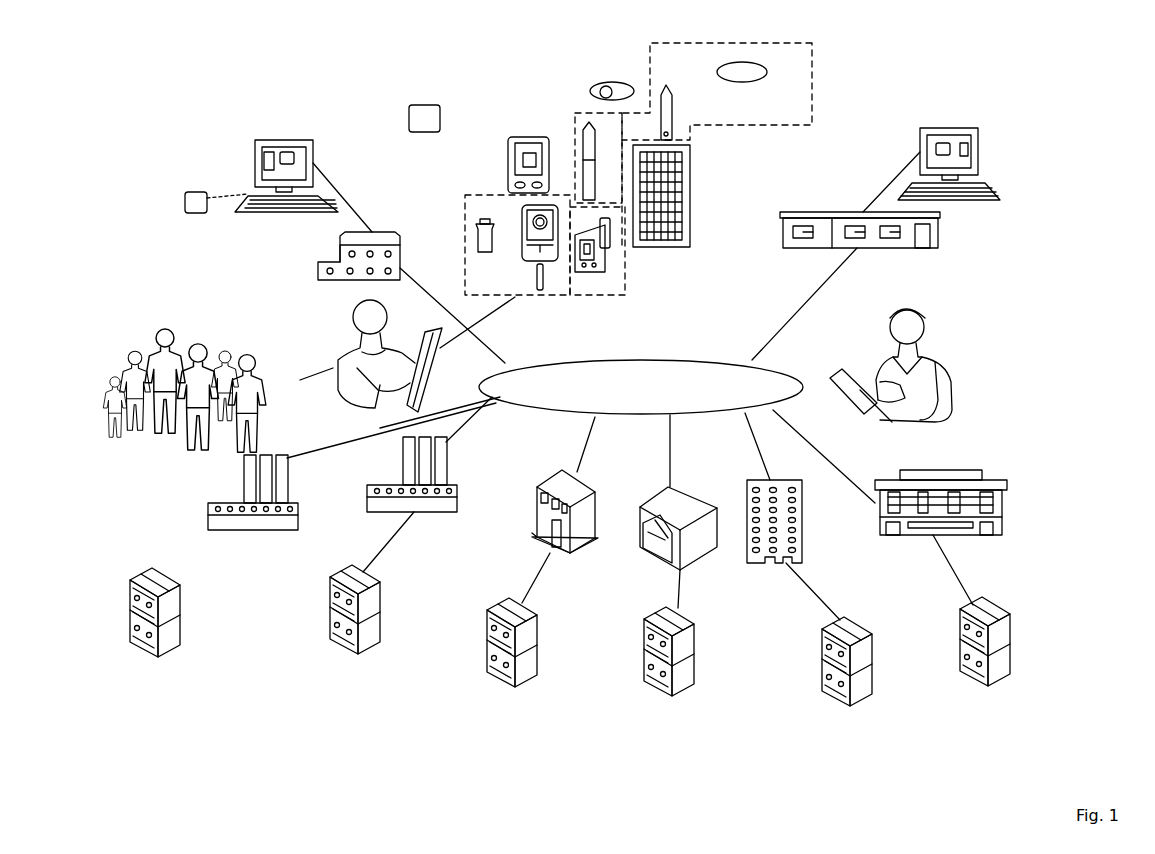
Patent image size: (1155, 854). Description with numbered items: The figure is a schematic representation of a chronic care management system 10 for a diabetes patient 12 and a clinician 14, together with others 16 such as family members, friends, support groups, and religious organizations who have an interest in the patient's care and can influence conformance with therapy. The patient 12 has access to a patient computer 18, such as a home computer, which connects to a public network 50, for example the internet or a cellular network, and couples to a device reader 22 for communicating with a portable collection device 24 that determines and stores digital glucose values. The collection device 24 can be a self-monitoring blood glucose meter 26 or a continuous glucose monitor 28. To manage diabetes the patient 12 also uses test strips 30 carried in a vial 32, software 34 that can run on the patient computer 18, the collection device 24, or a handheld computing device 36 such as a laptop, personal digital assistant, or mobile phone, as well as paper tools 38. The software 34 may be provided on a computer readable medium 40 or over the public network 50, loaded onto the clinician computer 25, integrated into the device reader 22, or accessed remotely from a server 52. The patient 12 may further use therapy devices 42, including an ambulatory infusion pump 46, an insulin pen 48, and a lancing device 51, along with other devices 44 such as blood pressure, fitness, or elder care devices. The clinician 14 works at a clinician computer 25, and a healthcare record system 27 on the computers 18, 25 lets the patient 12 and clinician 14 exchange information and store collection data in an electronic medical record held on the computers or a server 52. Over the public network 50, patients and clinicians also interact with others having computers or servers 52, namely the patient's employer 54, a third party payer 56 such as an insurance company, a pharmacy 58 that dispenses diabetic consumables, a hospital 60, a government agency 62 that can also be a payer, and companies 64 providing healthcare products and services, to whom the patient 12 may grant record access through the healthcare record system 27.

The chronic care management system 10 is at (214, 100).
The diabetes patient 12 is at (348, 362).
The clinician 14 is at (938, 362).
The others having an interest in the chronic care management 16 is at (136, 328).
The patient computer 18 is at (255, 165).
The device reader 22 is at (196, 192).
The portable collection device 24 is at (436, 235).
The clinician computer 25 is at (982, 145).
The self-monitoring blood glucose meter 26 is at (553, 263).
The healthcare record system 27 is at (268, 155).
The continuous glucose monitor 28 is at (590, 282).
The test strips 30 is at (540, 292).
The vial 32 is at (486, 253).
The software 34 is at (288, 152).
The handheld computing device 36 is at (530, 137).
The paper tools 38 is at (692, 200).
The computer readable medium 40 is at (606, 82).
The therapy devices 42 is at (820, 68).
The other devices 44 is at (418, 104).
The ambulatory infusion pump 46 is at (768, 70).
The insulin pen 48 is at (680, 110).
The public network 50 is at (695, 360).
The lancing device 51 is at (605, 132).
The server 52 is at (182, 608).
The employer 54 is at (207, 515).
The third party payer 56 is at (663, 495).
The pharmacy 58 is at (530, 500).
The hospital 60 is at (1004, 510).
The government agency 62 is at (802, 525).
The companies providing healthcare products and services 64 is at (368, 492).